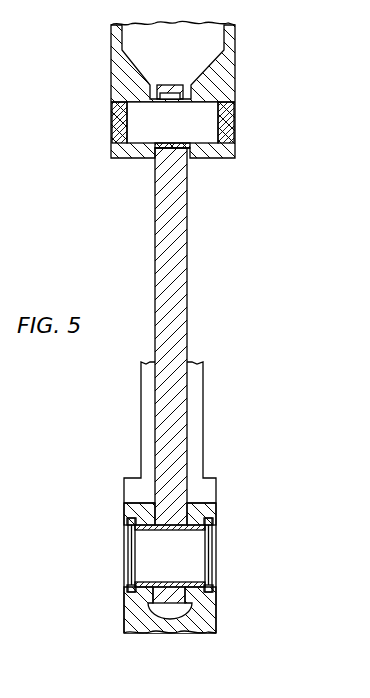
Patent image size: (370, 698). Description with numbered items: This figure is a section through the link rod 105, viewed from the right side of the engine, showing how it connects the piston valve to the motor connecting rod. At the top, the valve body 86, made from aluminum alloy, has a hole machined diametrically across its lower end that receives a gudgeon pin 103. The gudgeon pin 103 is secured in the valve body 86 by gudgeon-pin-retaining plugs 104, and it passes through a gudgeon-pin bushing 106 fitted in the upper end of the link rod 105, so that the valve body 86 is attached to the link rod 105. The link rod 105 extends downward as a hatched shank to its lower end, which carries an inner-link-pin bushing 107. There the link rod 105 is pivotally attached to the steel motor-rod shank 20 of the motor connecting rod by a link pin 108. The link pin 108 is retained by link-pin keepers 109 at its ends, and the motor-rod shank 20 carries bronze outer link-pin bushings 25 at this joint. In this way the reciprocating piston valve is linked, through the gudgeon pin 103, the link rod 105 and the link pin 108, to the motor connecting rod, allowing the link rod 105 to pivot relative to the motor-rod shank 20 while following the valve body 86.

The valve body 86 is at (236, 50).
The gudgeon-pin-retaining plugs 104 is at (111, 112).
The gudgeon-pin bushing 106 is at (156, 160).
The gudgeon pin 103 is at (200, 149).
The link rod 105 is at (188, 271).
The motor-rod shank 20 is at (217, 488).
The link-pin keepers 109 is at (130, 531).
The link pin 108 is at (213, 553).
The inner-link-pin bushing 107 is at (150, 601).
The outer link-pin bushings 25 is at (192, 598).